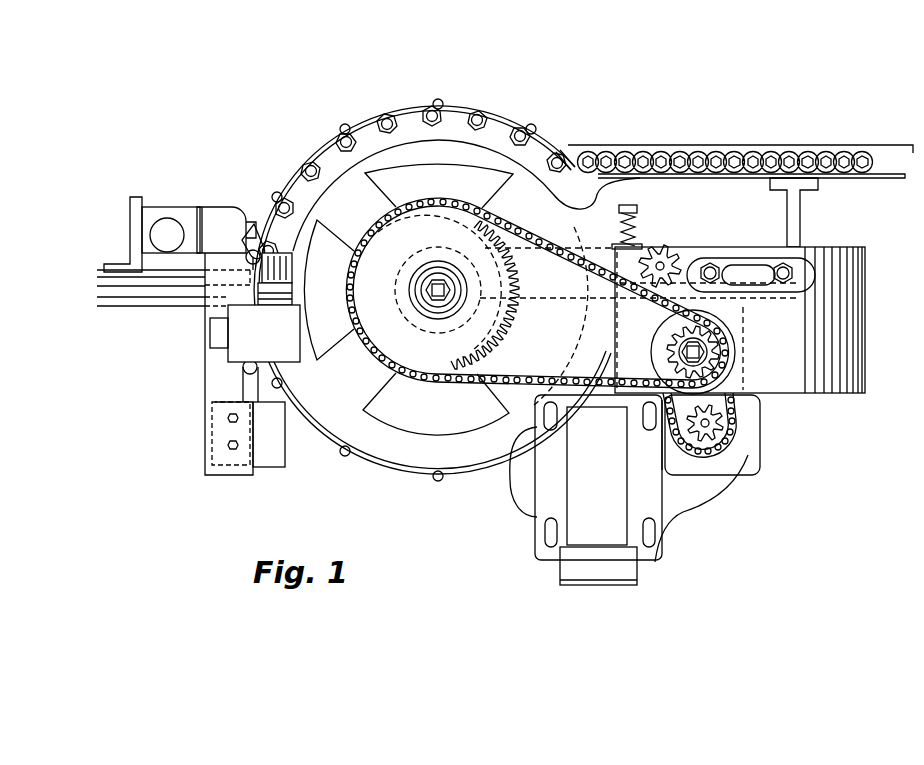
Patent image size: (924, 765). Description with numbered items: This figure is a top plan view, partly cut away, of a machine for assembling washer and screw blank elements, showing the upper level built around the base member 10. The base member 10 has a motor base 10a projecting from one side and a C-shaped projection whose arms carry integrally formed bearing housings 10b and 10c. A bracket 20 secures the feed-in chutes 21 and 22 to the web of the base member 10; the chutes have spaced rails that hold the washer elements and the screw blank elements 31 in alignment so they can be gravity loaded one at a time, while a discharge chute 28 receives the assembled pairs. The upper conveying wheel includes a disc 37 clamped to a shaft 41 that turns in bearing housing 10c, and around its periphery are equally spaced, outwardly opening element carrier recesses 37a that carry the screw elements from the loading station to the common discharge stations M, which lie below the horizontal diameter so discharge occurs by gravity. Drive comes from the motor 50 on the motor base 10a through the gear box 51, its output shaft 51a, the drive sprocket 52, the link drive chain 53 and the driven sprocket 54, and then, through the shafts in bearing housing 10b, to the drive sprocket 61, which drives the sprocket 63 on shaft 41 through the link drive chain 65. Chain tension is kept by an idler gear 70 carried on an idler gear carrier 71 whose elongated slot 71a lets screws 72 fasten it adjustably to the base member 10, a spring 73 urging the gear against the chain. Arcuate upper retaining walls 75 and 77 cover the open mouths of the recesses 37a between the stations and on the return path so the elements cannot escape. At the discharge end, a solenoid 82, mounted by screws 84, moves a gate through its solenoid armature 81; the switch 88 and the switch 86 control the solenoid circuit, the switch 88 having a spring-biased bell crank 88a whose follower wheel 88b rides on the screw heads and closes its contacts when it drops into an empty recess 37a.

The base member 10 is at (866, 346).
The motor base 10a is at (640, 556).
The bearing housing 10b is at (654, 366).
The bearing housing 10c is at (447, 282).
The bracket 20 is at (790, 215).
The feed-in chute 21 is at (564, 138).
The feed-in chute 22 is at (772, 146).
The discharge chute 28 is at (118, 310).
The screw blank element 31 is at (493, 120).
The disc 37 is at (460, 132).
The element carrier recess 37a is at (603, 180).
The shaft 41 is at (452, 312).
The motor 50 is at (586, 477).
The gear box 51 is at (760, 472).
The gear box output shaft 51a is at (730, 472).
The drive sprocket 52 is at (703, 443).
The link drive chain 53 is at (738, 418).
The driven sprocket 54 is at (738, 358).
The drive sprocket 61 is at (675, 334).
The sprocket 63 is at (449, 279).
The link drive chain 65 is at (526, 272).
The idler gear 70 is at (666, 262).
The idler gear carrier 71 is at (748, 266).
The elongated slot 71a is at (792, 300).
The screws 72 is at (715, 285).
The spring 73 is at (637, 230).
The upper retaining wall 75 is at (420, 110).
The upper retaining wall 77 is at (400, 474).
The solenoid armature 81 is at (245, 377).
The solenoid 82 is at (270, 456).
The screws 84 is at (228, 446).
The switch 86 is at (170, 222).
The switch 88 is at (255, 333).
The bell crank 88a is at (296, 290).
The follower wheel 88b is at (268, 268).
The discharge stations M is at (255, 272).